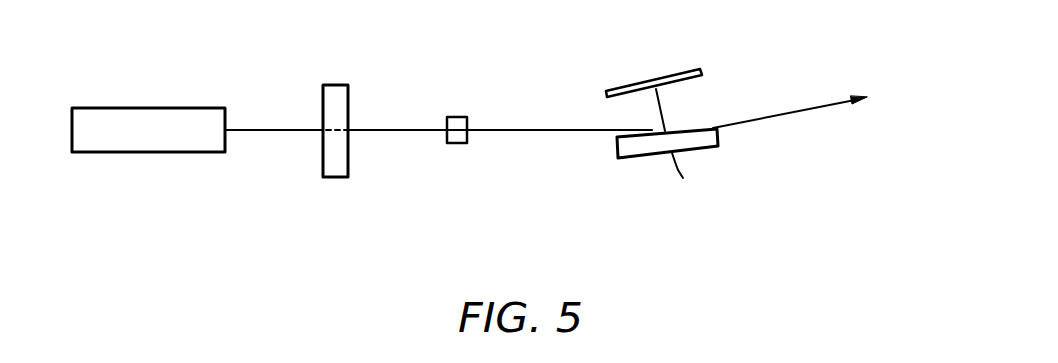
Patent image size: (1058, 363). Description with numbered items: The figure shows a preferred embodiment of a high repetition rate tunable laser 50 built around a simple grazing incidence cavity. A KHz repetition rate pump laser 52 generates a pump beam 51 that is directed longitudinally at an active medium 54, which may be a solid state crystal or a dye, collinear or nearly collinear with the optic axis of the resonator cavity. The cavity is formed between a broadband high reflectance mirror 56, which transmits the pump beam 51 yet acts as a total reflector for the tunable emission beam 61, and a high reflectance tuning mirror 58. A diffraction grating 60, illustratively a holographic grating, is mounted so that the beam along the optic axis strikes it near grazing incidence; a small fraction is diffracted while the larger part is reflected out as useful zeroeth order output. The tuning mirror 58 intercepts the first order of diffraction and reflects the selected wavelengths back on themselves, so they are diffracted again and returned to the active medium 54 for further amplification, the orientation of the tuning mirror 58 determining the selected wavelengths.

The high repetition rate tunable laser 50 is at (609, 262).
The pump beam 51 is at (283, 131).
The KHz repetition rate pump laser 52 is at (161, 153).
The active medium 54 is at (460, 143).
The broadband high reflectance mirror 56 is at (336, 85).
The tuning mirror 58 is at (607, 97).
The diffraction grating 60 is at (618, 152).
The tunable emission beam 61 is at (784, 117).